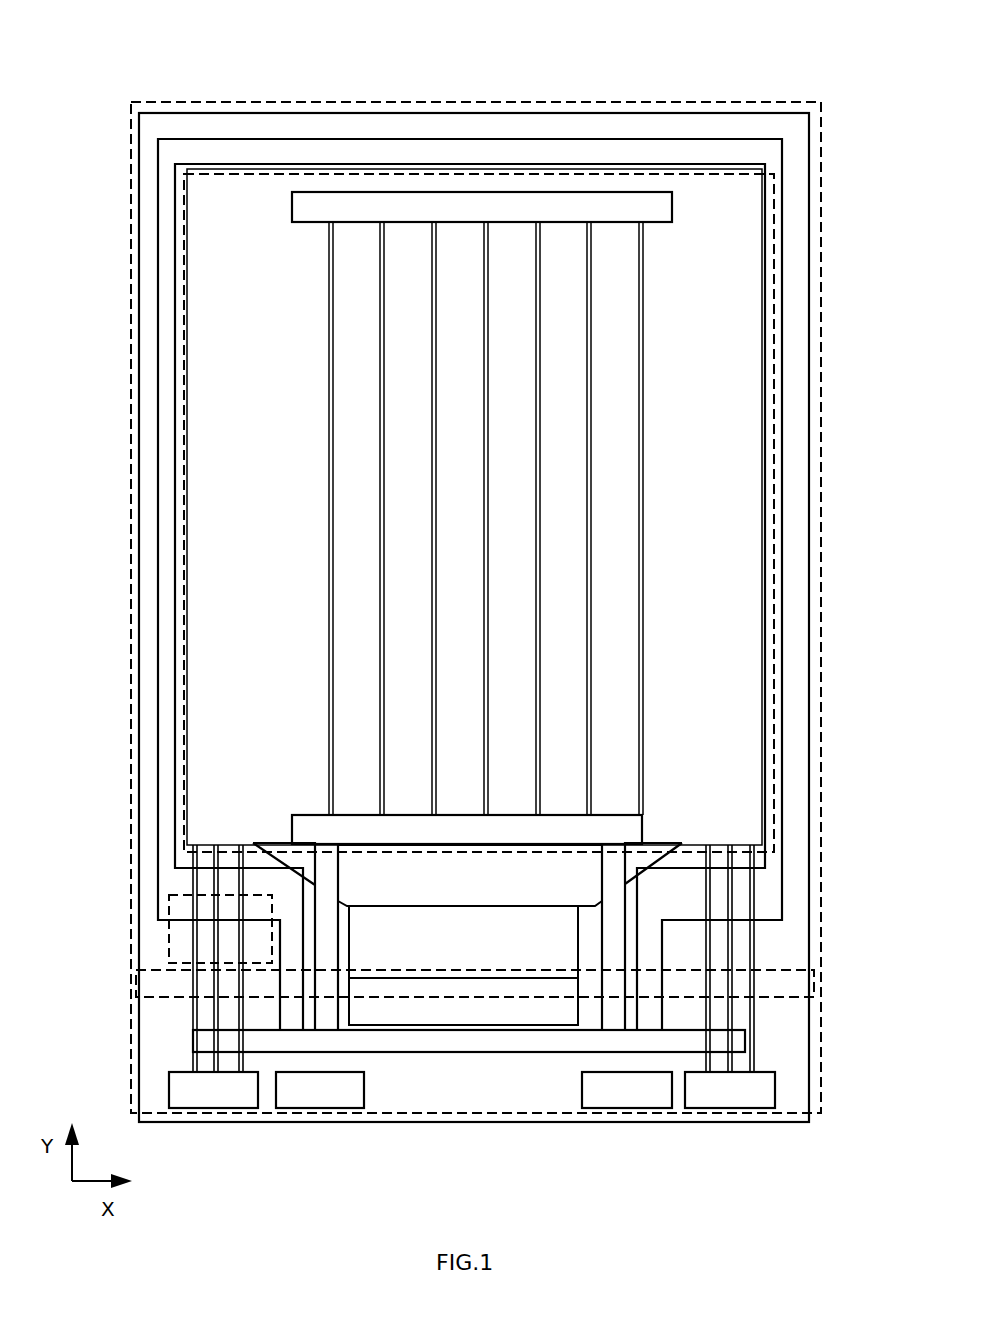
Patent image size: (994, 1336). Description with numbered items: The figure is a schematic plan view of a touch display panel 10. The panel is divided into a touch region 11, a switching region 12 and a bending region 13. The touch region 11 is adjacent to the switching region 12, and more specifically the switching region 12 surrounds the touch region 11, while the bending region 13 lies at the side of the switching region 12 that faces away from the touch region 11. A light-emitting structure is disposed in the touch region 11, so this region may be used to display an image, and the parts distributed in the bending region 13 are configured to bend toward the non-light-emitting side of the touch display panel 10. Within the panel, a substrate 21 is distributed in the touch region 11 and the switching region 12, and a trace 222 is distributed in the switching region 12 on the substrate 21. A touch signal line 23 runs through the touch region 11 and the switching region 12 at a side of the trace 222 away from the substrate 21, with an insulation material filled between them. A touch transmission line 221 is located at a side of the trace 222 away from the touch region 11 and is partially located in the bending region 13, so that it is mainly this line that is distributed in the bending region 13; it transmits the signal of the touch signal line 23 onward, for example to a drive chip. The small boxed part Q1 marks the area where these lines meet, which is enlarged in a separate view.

The touch display panel 10 is at (474, 52).
The touch region 11 is at (773, 317).
The switching region 12 is at (822, 447).
The bending region 13 is at (137, 997).
The substrate 21 is at (167, 1029).
The touch transmission line 221 is at (193, 950).
The trace 222 is at (772, 893).
The touch signal line 23 is at (178, 904).
The part Q1 is at (170, 926).